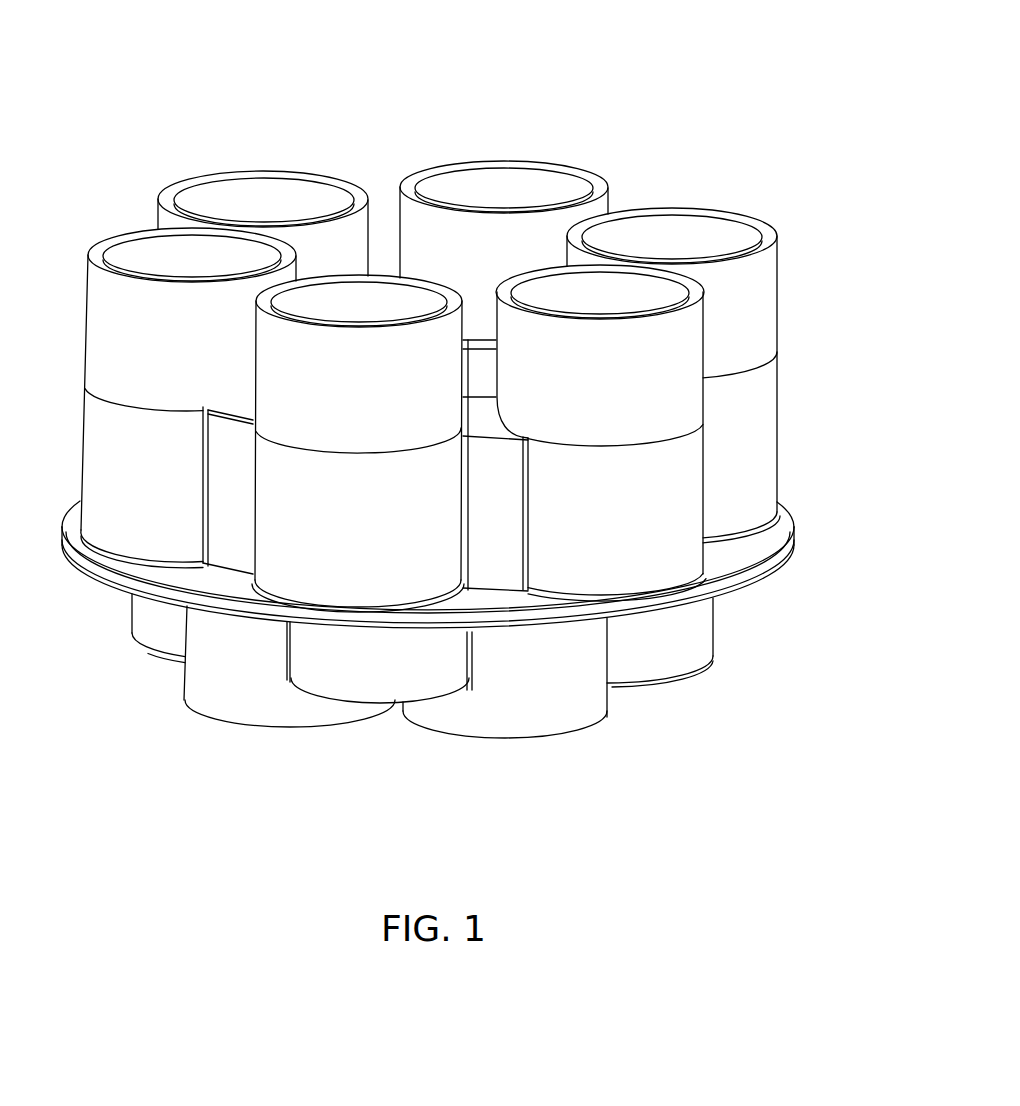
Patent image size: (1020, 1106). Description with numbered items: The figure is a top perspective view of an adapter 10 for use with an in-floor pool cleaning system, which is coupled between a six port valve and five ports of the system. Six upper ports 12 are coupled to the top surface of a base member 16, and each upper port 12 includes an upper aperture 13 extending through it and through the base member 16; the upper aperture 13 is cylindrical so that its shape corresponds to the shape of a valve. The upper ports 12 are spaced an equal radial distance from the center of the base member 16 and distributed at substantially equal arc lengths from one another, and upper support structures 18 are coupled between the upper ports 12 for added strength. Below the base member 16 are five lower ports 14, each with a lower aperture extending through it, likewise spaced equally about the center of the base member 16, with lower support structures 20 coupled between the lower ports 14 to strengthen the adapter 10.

The adapter 10 is at (637, 100).
The upper port 12 is at (750, 308).
The upper aperture 13 is at (700, 242).
The lower port 14 is at (540, 693).
The base member 16 is at (743, 553).
The upper support structure 18 is at (227, 520).
The lower support structure 20 is at (387, 670).